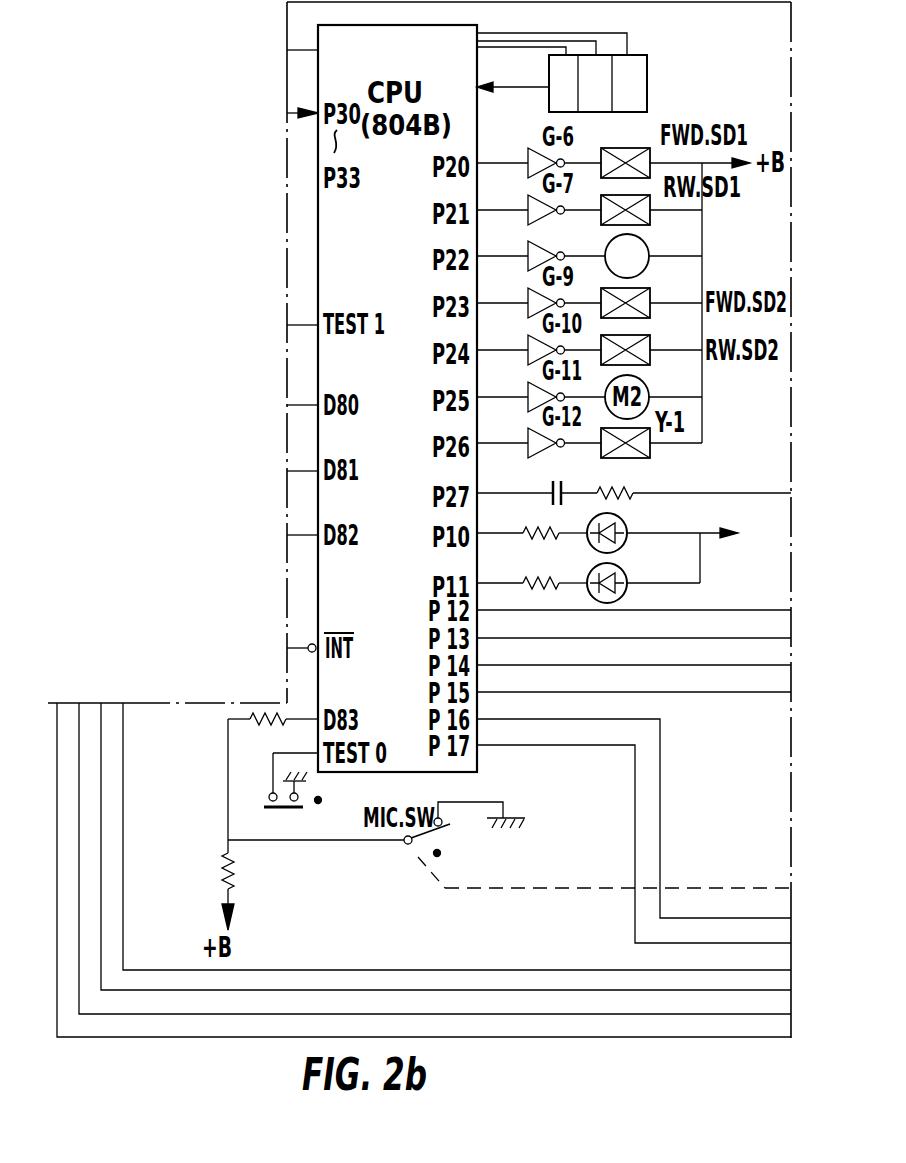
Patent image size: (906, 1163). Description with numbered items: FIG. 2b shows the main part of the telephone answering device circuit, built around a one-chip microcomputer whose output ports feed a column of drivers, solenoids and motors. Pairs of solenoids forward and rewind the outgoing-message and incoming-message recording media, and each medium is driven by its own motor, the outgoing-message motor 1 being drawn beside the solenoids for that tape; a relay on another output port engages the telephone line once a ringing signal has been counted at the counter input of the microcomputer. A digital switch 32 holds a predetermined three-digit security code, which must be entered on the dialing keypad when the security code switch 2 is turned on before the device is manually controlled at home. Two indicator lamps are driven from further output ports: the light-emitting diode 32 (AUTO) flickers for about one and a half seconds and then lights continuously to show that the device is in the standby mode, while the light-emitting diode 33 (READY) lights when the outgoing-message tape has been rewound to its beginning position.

The digital switch 32 is at (647, 77).
The light-emitting diode (READY) 33 is at (593, 573).
The switch SW2 for secret number 2 is at (315, 825).
The motor M1 1 is at (589, 246).